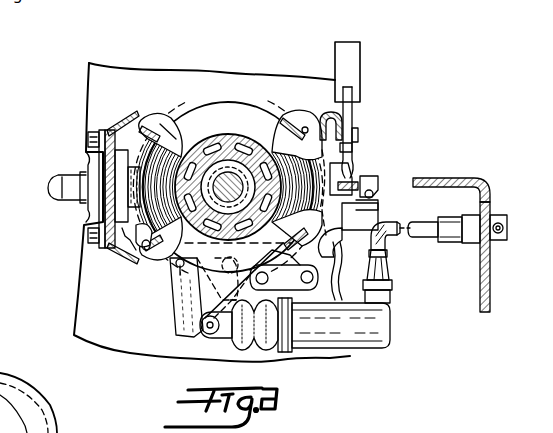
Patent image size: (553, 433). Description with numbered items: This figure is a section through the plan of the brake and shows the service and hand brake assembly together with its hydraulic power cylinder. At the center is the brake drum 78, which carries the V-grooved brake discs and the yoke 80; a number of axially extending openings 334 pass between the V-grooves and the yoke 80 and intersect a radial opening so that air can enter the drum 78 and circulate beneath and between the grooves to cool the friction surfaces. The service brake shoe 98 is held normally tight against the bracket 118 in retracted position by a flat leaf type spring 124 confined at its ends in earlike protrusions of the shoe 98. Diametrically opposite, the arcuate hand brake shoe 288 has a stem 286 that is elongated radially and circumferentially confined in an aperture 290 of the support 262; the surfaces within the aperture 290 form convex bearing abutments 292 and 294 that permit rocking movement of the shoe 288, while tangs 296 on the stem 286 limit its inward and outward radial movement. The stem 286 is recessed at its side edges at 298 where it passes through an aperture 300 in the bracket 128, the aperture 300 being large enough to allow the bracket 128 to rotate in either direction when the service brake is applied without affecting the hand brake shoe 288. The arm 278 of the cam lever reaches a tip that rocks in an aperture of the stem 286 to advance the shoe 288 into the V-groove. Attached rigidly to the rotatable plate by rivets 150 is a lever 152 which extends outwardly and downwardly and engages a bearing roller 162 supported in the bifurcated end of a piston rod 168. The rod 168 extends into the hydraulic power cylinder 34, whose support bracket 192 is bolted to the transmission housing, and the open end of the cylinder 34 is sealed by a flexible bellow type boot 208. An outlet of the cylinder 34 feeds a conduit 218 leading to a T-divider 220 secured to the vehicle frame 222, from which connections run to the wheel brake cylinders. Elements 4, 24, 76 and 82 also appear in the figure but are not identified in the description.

The housing portion 4 is at (13, 375).
The output shaft 24 is at (67, 192).
The hydraulic power cylinder 34 is at (376, 309).
The motor shaft 76 is at (229, 166).
The brake drum 78 is at (229, 125).
The yoke 80 is at (28, 388).
The end plate 82 is at (107, 247).
The brake shoe 98 is at (168, 128).
The bracket 118 is at (146, 250).
The flat leaf type spring 124 is at (136, 250).
The bracket 128 is at (290, 102).
The rivets 150 is at (185, 276).
The lever 152 is at (178, 312).
The bearing roller 162 is at (214, 338).
The piston rod 168 is at (243, 338).
The support bracket 192 is at (315, 267).
The flexible bellow type boot 208 is at (275, 352).
The conduit 218 is at (430, 238).
The T-divider 220 is at (477, 222).
The vehicle frame 222 is at (492, 302).
The support 262 is at (384, 256).
The arm 278 is at (376, 193).
The stem 286 is at (332, 182).
The arcuate brake shoe 288 is at (290, 128).
The aperture 290 is at (268, 280).
The convex bearing abutment 292 is at (338, 125).
The convex bearing abutment 294 is at (384, 244).
The tangs 296 is at (354, 135).
The recess 298 is at (348, 148).
The aperture 300 is at (305, 130).
The axially extending openings 334 is at (228, 178).